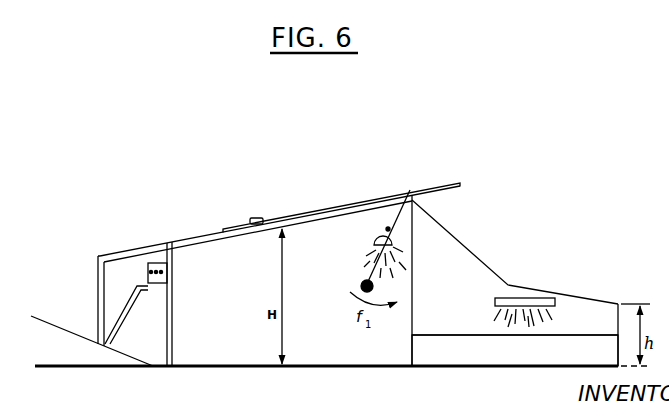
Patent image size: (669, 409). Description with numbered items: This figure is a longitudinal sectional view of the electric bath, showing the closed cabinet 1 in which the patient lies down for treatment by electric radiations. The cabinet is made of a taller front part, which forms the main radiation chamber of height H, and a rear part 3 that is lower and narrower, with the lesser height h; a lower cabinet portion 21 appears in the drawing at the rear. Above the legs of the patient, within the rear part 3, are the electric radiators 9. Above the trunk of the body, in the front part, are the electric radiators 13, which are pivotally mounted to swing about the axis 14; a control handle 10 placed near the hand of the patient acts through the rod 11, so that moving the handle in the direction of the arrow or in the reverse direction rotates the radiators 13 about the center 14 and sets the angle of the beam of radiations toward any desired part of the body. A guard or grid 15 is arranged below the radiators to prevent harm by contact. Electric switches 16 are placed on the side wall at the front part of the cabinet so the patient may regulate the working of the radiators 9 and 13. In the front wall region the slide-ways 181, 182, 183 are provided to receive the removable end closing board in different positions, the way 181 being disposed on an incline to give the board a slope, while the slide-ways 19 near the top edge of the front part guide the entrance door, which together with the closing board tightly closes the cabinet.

The closed cabinet 1 is at (334, 369).
The lower building section 21 is at (501, 360).
The rear part 3 is at (468, 246).
The electric radiators 9 is at (521, 299).
The control handle 10 is at (361, 290).
The rod 11 is at (376, 273).
The electric radiators 13 is at (397, 241).
The axis 14 is at (395, 222).
The guard or grid 15 is at (371, 257).
The electric switches 16 is at (154, 270).
The slide-way 181 is at (173, 282).
The slide-way 182 is at (120, 307).
The slide-way 183 is at (97, 272).
The slide-ways 19 is at (444, 188).